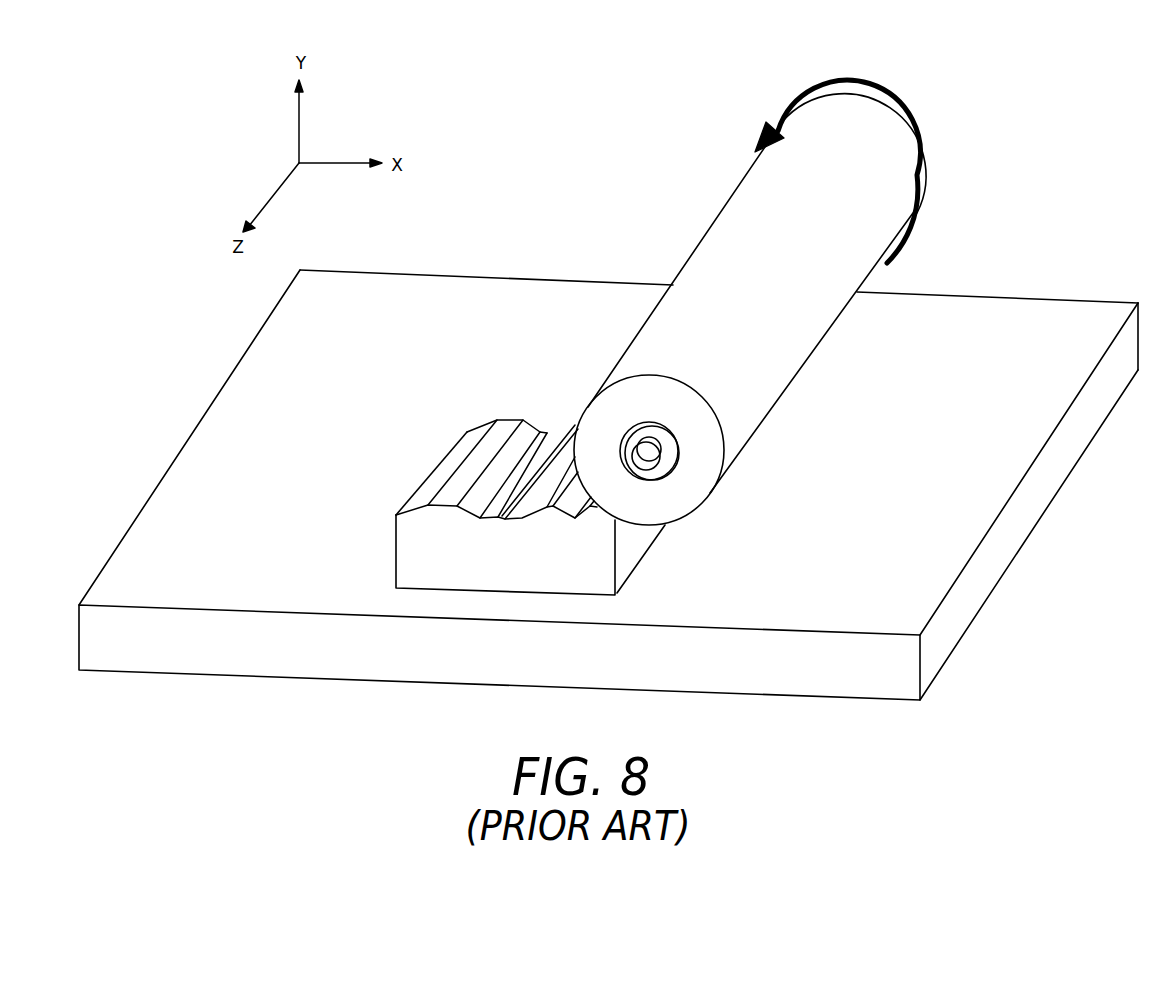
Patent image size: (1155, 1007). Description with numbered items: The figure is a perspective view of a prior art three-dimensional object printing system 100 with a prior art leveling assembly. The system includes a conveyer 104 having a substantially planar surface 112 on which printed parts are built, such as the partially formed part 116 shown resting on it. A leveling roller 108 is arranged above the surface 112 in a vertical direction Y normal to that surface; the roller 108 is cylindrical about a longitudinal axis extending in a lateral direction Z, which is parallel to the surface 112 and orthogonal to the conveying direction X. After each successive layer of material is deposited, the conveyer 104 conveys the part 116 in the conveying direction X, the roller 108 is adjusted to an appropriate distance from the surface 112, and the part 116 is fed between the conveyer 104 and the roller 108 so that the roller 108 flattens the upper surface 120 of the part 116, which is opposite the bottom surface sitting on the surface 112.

The three-dimensional object printing system 100 is at (546, 117).
The conveyer 104 is at (322, 668).
The leveling roller 108 is at (722, 243).
The surface 112 is at (467, 297).
The partially formed part 116 is at (415, 562).
The upper surface 120 is at (535, 442).